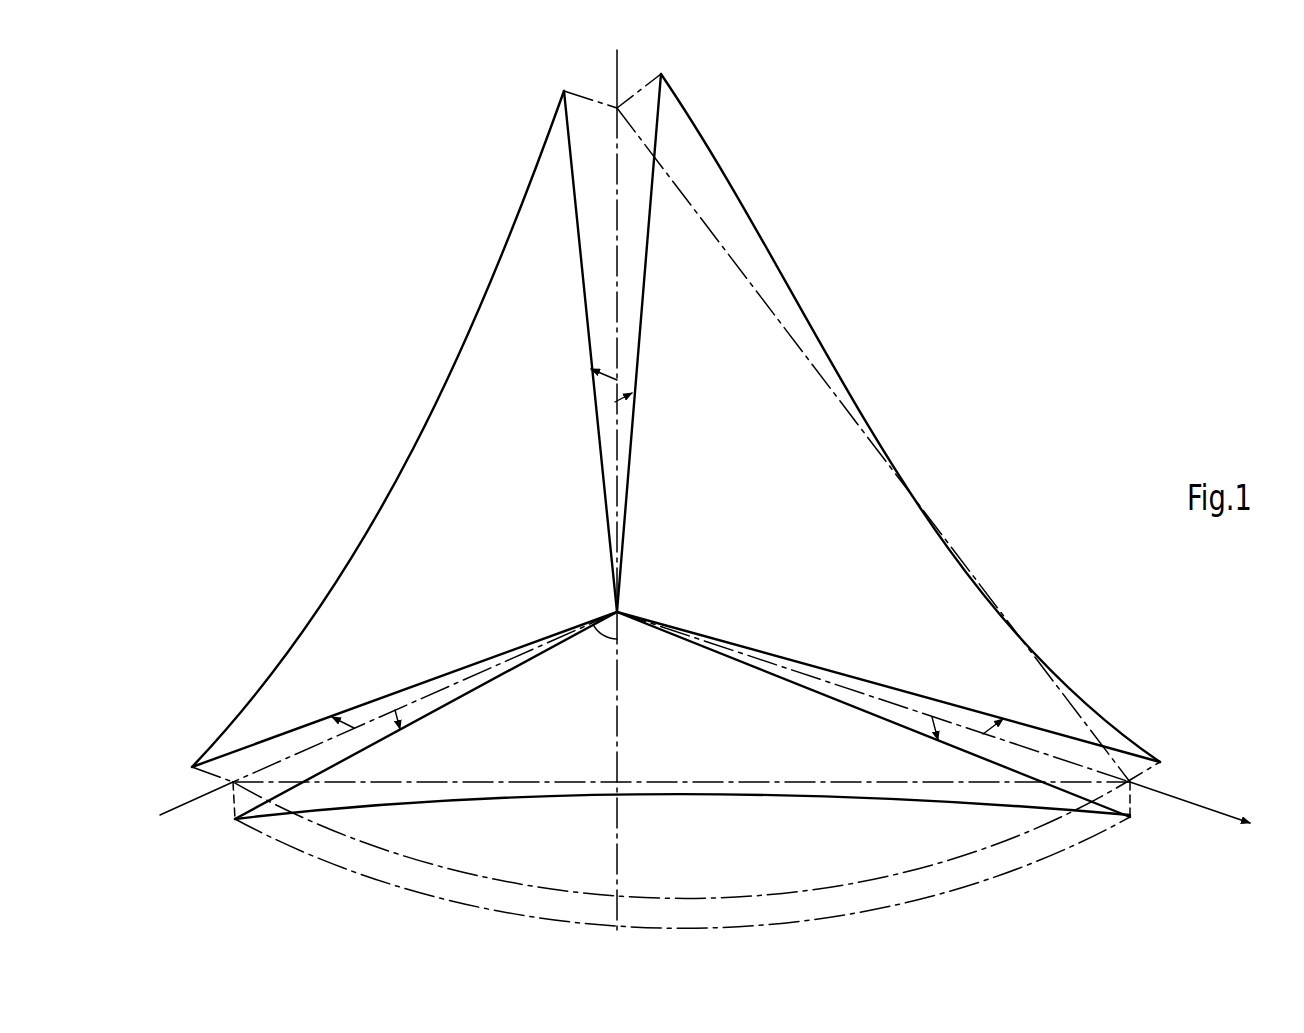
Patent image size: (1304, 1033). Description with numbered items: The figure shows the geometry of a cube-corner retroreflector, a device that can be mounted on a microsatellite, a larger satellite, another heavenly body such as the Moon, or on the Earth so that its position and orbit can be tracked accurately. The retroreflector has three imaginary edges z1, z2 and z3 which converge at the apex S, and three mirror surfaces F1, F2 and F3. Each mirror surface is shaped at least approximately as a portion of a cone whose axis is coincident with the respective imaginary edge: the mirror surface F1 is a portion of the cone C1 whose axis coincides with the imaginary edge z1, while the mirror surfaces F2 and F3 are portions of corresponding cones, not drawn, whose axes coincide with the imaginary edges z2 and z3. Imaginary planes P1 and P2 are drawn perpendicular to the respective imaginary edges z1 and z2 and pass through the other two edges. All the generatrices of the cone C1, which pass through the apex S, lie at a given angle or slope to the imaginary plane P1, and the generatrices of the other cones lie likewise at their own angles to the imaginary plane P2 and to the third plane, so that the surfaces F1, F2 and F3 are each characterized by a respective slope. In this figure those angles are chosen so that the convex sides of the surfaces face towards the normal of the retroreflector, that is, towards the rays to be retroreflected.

The imaginary edge z1 is at (634, 490).
The imaginary edge z2 is at (372, 727).
The imaginary edge z3 is at (952, 726).
The apex S is at (620, 612).
The imaginary plane P1 is at (713, 781).
The imaginary plane P2 is at (702, 221).
The mirror surface F1 is at (860, 800).
The mirror surface F2 is at (793, 296).
The mirror surface F3 is at (419, 433).
The cone C1 is at (550, 917).